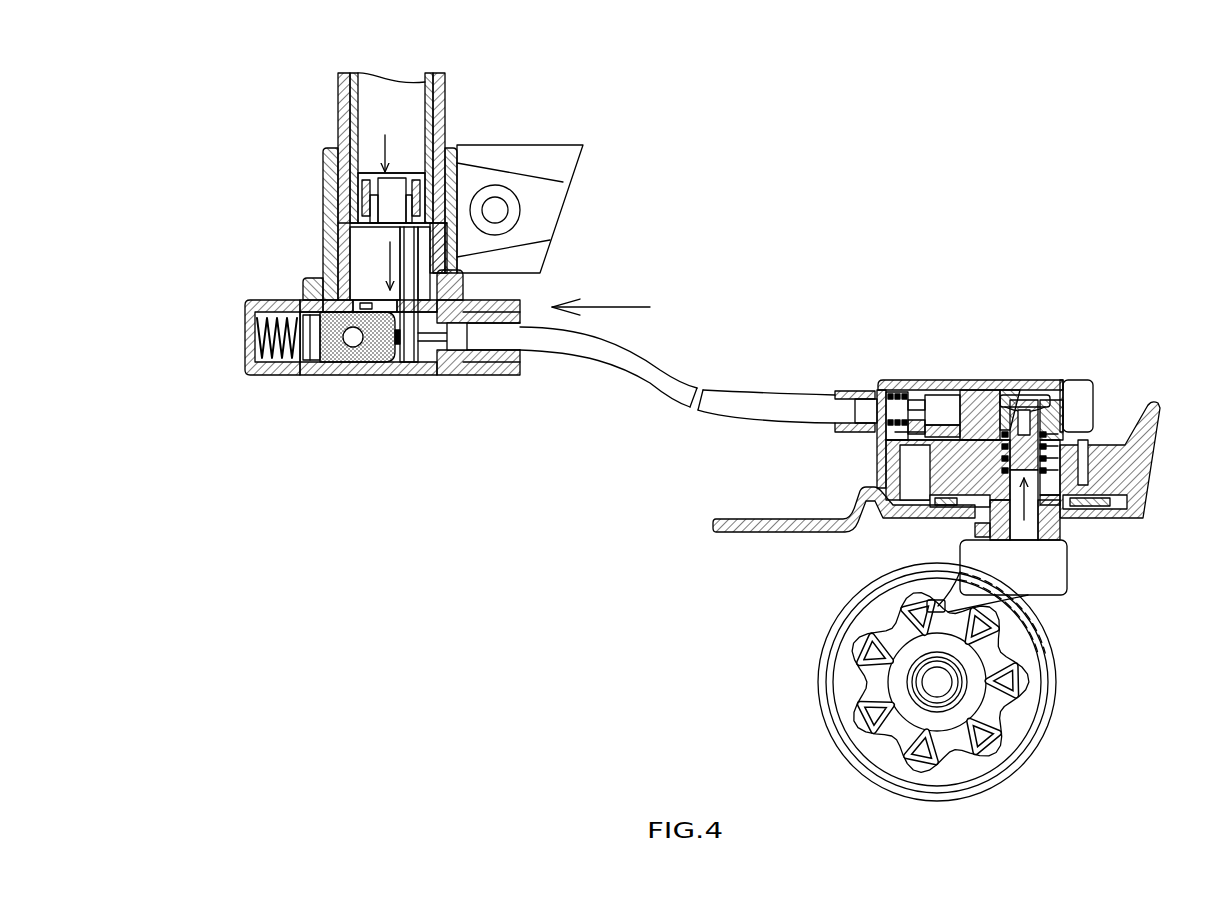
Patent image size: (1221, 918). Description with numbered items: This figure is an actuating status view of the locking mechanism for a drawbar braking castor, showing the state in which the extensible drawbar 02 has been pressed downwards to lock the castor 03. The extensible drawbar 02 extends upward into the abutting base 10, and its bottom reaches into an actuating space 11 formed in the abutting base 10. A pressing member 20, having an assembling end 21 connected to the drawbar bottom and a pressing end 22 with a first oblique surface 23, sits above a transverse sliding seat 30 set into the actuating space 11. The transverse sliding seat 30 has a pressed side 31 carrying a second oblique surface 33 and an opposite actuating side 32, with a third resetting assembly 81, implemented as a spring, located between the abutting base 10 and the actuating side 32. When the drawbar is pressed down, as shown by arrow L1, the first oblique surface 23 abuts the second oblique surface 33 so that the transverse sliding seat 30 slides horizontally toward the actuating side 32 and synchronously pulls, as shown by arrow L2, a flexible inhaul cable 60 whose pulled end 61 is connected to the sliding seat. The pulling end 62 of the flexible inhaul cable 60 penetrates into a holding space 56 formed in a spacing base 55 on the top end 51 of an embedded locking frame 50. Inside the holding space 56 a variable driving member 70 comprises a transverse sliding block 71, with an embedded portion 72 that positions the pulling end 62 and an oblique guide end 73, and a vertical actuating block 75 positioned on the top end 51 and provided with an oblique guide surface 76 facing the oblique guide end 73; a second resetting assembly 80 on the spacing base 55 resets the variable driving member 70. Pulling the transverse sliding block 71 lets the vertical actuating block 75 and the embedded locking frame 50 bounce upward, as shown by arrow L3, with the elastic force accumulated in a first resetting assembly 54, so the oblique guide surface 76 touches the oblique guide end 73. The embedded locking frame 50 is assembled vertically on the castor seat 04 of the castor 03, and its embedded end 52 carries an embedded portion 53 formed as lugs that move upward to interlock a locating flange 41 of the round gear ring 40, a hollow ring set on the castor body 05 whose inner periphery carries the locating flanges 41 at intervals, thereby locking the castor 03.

The extensible drawbar 02 is at (447, 140).
The pressing member 20 is at (386, 139).
The assembling end 21 is at (360, 168).
The arrow L1 is at (388, 245).
The actuating side 32 is at (314, 330).
The pressed side 31 is at (368, 300).
The second oblique surface 33 is at (455, 300).
The abutting base 10 is at (245, 320).
The third resetting assembly 81 is at (262, 350).
The actuating space 11 is at (300, 368).
The transverse sliding seat 30 is at (358, 364).
The first oblique surface 23 is at (404, 350).
The pressing end 22 is at (418, 355).
The pulled end 61 is at (497, 345).
The arrow L2 is at (614, 307).
The flexible inhaul cable 60 is at (680, 370).
The second resetting assembly 80 is at (887, 386).
The spacing base 55 is at (930, 398).
The pulling end 62 is at (958, 400).
The embedded portion 72 is at (988, 395).
The oblique guide surface 76 is at (992, 395).
The transverse sliding block 71 is at (1010, 398).
The oblique guide end 73 is at (1030, 392).
The variable driving member 70 is at (1052, 398).
The vertical actuating block 75 is at (1082, 408).
The top end 51 is at (1040, 452).
The holding space 56 is at (912, 440).
The first resetting assembly 54 is at (1040, 462).
The arrow L3 is at (1040, 518).
The embedded locking frame 50 is at (1070, 569).
The locating flanges 41 is at (915, 605).
The embedded portion 53 is at (932, 600).
The embedded end 52 is at (1000, 645).
The round gear ring 40 is at (1012, 717).
The castor 03 is at (840, 573).
The castor seat 04 is at (807, 533).
The castor body 05 is at (820, 650).